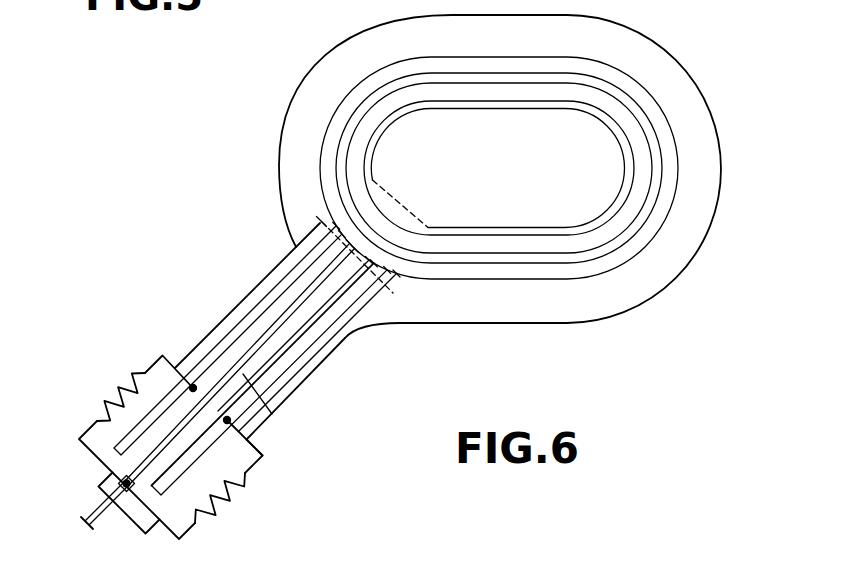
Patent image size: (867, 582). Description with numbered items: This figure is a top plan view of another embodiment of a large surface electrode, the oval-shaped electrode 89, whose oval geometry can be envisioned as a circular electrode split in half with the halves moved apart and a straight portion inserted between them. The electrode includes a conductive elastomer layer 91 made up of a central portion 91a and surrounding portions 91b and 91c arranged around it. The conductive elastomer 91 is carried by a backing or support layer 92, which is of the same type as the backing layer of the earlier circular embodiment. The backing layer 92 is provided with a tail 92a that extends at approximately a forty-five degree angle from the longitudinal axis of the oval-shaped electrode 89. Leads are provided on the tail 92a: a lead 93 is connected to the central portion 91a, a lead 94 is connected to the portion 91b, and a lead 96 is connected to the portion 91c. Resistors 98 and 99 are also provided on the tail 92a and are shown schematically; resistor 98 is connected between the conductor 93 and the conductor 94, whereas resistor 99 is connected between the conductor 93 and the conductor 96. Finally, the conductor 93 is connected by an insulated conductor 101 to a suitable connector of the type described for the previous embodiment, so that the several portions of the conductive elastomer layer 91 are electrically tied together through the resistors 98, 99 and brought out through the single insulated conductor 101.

The oval-shaped electrode 89 is at (676, 44).
The conductive elastomer layer 91 is at (348, 93).
The central portion 91a is at (387, 148).
The surrounding portion 91b is at (628, 120).
The surrounding portion 91c is at (682, 163).
The backing or support layer 92 is at (630, 309).
The tail 92a is at (313, 373).
The lead 93 is at (272, 412).
The lead 94 is at (246, 418).
The lead 96 is at (215, 331).
The resistor 98 is at (230, 501).
The resistor 99 is at (131, 373).
The insulated conductor 101 is at (93, 513).